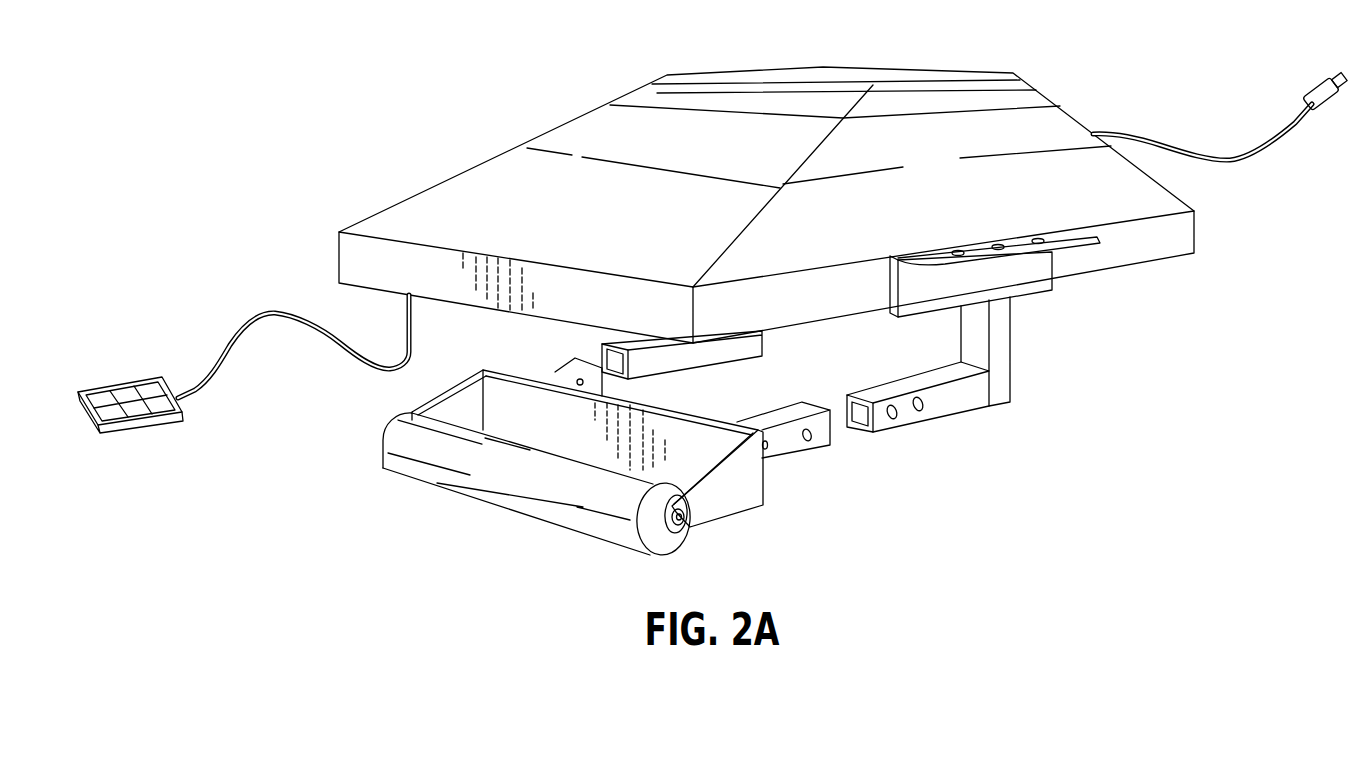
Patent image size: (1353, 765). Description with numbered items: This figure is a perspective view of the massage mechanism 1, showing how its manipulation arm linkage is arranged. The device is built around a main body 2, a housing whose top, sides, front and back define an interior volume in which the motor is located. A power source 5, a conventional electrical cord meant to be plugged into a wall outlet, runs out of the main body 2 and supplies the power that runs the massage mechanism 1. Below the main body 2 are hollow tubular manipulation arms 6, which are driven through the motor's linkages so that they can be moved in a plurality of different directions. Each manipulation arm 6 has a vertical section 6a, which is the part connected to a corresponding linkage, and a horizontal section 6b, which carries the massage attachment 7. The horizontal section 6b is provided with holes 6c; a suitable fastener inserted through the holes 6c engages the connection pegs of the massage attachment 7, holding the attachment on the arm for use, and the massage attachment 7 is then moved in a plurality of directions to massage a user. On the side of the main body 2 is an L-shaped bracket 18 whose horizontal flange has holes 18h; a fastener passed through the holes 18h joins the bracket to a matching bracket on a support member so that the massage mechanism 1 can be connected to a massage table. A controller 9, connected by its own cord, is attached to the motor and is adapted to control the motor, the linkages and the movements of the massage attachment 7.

The massage mechanism 1 is at (763, 184).
The main body 2 is at (603, 104).
The power source 5 is at (1233, 161).
The manipulation arm 6 is at (645, 360).
The vertical section 6a is at (1012, 328).
The horizontal section 6b is at (955, 431).
The holes 6c is at (921, 412).
The massage attachment 7 is at (457, 513).
The controller 9 is at (122, 380).
The L-shaped bracket 18 is at (1040, 239).
The holes 18h is at (998, 244).